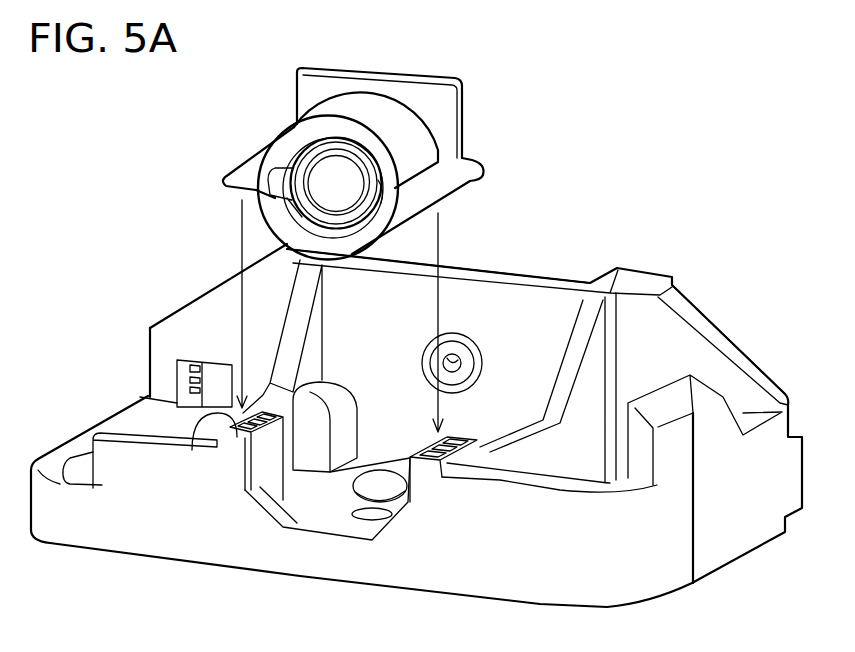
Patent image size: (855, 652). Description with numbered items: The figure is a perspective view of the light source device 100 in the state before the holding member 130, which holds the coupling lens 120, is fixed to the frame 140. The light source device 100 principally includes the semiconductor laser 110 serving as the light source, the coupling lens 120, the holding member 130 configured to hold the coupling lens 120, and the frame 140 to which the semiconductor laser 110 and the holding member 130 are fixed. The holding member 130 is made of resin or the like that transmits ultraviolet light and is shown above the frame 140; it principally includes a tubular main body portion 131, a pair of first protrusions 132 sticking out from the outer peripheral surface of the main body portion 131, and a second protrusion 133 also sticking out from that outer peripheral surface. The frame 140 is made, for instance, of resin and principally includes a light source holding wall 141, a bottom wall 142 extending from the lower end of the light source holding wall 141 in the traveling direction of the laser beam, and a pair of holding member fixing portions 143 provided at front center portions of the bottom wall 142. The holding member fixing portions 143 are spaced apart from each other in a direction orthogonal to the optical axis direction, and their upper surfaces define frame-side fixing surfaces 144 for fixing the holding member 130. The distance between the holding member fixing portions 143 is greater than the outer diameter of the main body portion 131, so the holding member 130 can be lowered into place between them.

The light source device 100 is at (416, 360).
The semiconductor laser 110 is at (452, 333).
The coupling lens 120 is at (343, 183).
The holding member 130 is at (340, 139).
The main body portion 131 is at (415, 135).
The first protrusions 132 is at (225, 181).
The second protrusion 133 is at (323, 80).
The frame 140 is at (719, 327).
The light source holding wall 141 is at (512, 278).
The bottom wall 142 is at (333, 517).
The holding member fixing portions 143 is at (230, 447).
The frame-side fixing surfaces 144 is at (207, 413).